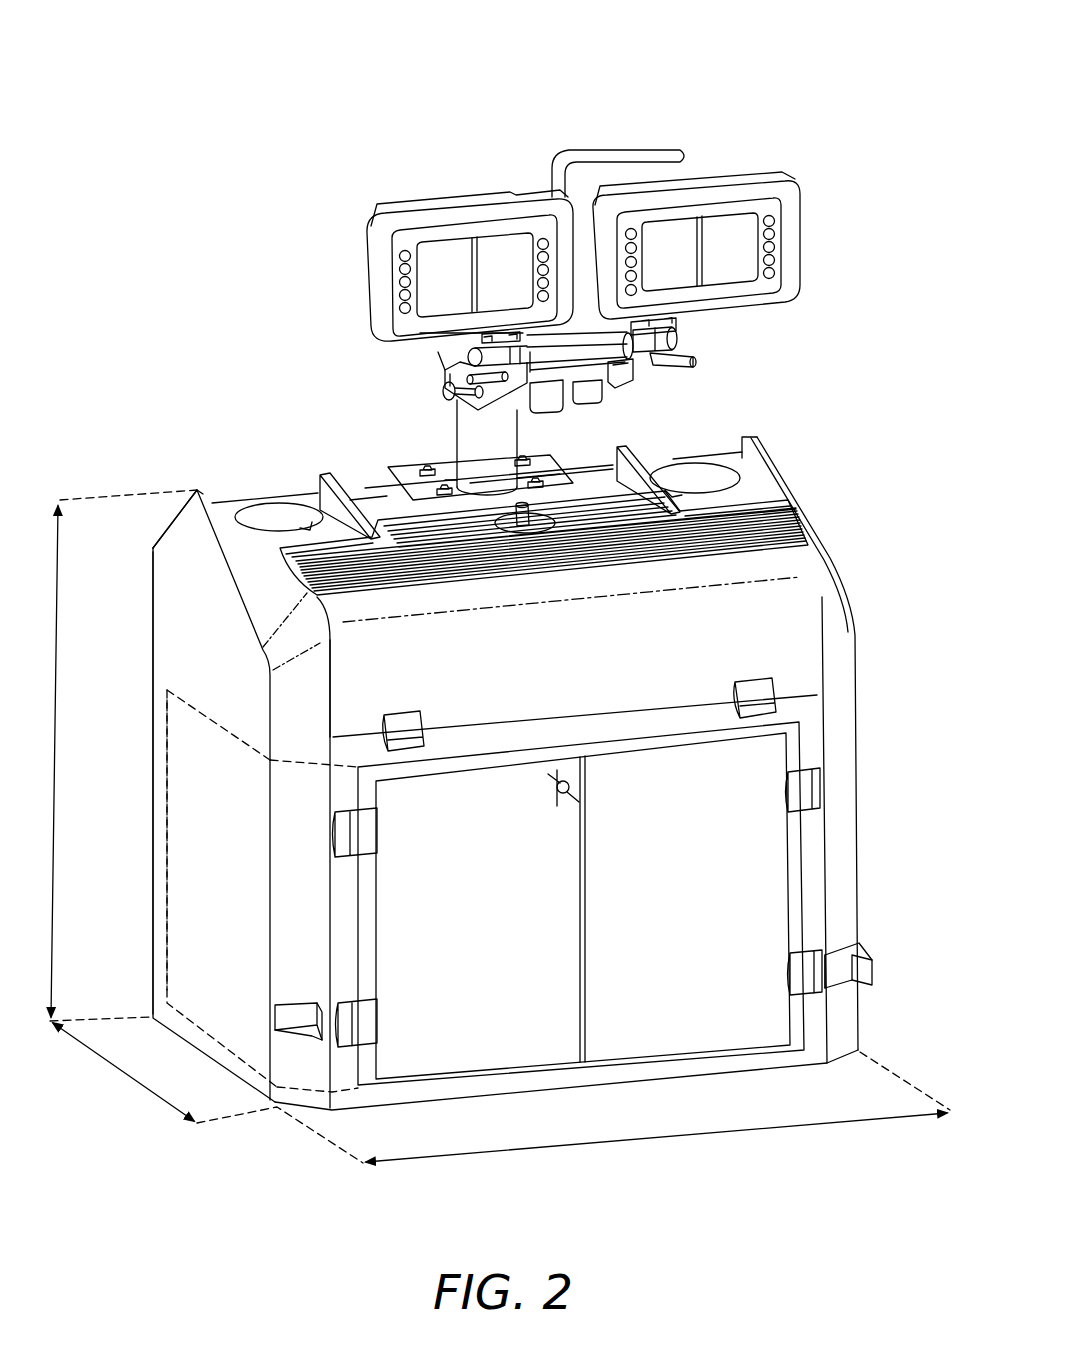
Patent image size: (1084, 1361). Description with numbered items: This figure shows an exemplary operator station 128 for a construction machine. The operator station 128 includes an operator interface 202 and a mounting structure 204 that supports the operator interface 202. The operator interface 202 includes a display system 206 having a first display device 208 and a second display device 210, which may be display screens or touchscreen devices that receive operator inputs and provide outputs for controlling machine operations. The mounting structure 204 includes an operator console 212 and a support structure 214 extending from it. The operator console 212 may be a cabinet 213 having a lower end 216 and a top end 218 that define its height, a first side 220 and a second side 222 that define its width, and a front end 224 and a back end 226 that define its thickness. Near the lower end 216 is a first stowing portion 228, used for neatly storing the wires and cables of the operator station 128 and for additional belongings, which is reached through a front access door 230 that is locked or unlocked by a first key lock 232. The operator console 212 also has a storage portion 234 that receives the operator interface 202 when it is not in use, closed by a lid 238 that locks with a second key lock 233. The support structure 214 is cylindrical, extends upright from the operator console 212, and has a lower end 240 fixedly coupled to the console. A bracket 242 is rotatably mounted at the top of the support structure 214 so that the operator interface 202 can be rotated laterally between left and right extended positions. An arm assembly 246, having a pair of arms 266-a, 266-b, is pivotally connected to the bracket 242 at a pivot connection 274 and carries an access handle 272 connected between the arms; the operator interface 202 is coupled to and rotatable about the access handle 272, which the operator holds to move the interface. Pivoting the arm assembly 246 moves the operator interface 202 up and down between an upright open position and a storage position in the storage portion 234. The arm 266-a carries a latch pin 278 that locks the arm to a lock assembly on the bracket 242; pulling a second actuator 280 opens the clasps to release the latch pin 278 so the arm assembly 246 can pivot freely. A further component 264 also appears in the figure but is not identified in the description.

The operator station 128 is at (838, 72).
The operator interface 202 is at (568, 148).
The mounting structure 204 is at (780, 440).
The display system 206 is at (755, 162).
The first display device 208 is at (382, 258).
The second display device 210 is at (797, 206).
The operator console 212 is at (168, 515).
The cabinet 213 is at (170, 875).
The support structure 214 is at (450, 447).
The lower end 216 is at (462, 1108).
The top end 218 is at (268, 490).
The first side 220 is at (188, 663).
The second side 222 is at (860, 668).
The front end 224 is at (790, 705).
The back end 226 is at (147, 602).
The first stowing portion 228 is at (190, 930).
The front access door 230 is at (490, 1010).
The first key lock 232 is at (572, 790).
The second key lock 233 is at (328, 493).
The storage portion 234 is at (800, 615).
The lid 238 is at (778, 528).
The lower end 240 is at (545, 510).
The bracket 242 is at (425, 354).
The arm assembly 246 is at (628, 388).
The lug block 264 is at (597, 405).
The arm 266-a is at (468, 404).
The arm 266-b is at (632, 366).
The access handle 272 is at (640, 340).
The pivot connection 274 is at (443, 392).
The latch pin 278 is at (460, 392).
The second actuator 280 is at (528, 400).